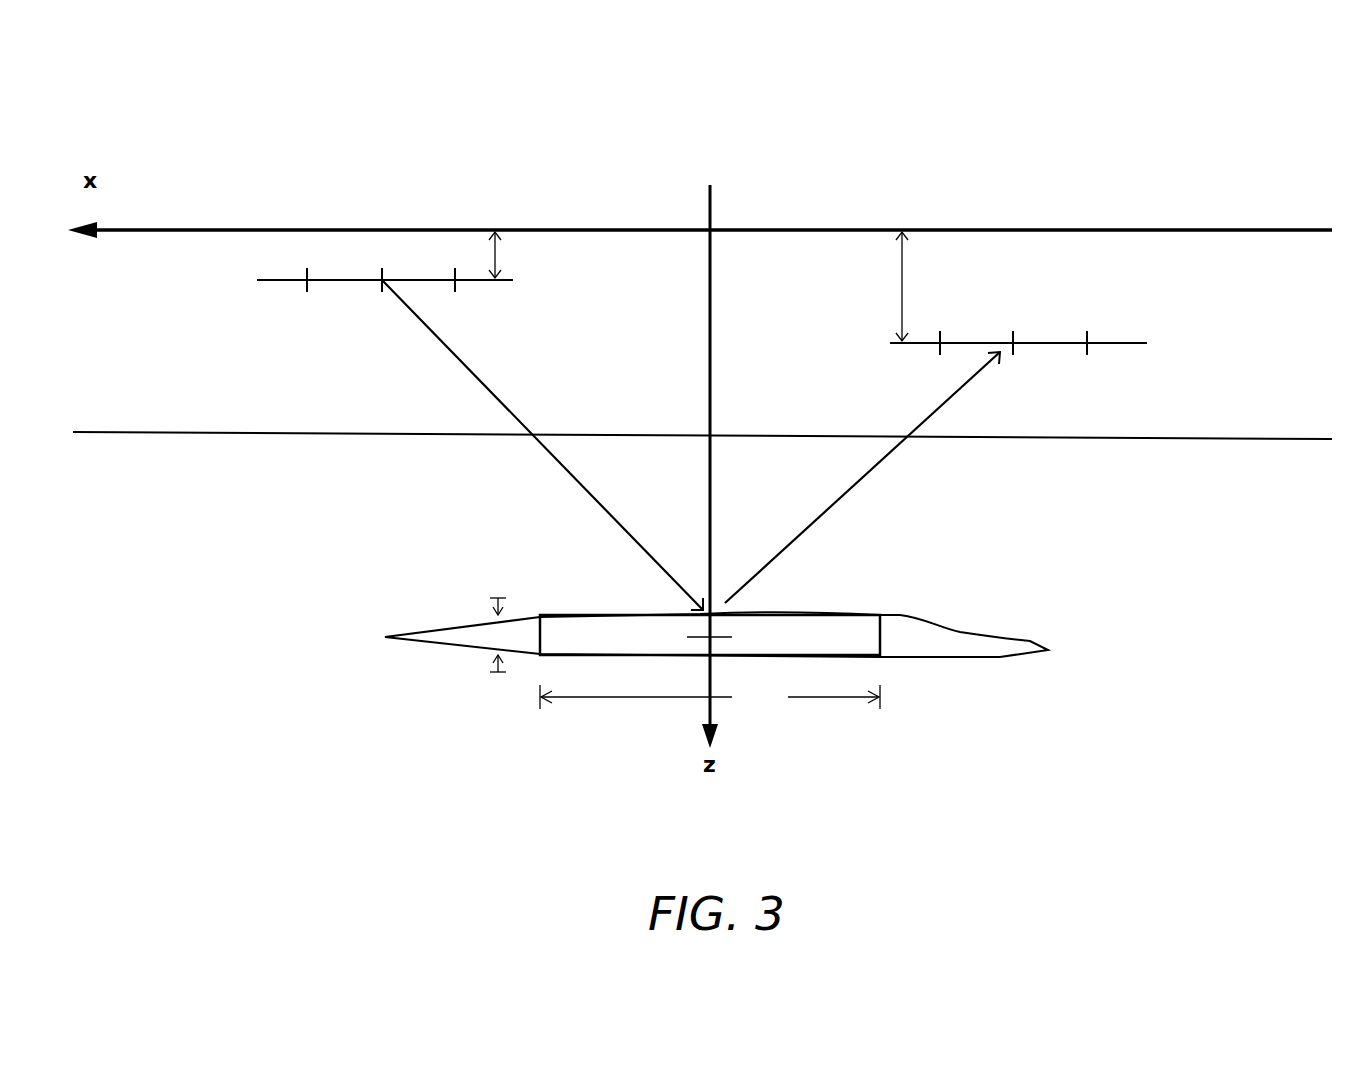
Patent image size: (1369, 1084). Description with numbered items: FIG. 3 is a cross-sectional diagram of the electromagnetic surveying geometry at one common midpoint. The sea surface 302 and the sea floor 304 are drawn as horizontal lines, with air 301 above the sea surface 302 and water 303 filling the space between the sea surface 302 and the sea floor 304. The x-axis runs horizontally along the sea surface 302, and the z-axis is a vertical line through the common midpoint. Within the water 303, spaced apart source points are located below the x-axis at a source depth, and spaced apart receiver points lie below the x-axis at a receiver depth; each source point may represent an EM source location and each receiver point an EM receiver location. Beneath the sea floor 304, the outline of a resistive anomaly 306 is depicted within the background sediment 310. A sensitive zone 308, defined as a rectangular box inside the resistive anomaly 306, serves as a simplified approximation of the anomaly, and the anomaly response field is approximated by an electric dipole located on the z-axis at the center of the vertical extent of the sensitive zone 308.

The air 301 is at (230, 92).
The sea surface 302 is at (1028, 230).
The water 303 is at (651, 421).
The sea floor 304 is at (1072, 439).
The resistive anomaly 306 is at (928, 638).
The sensitive zone 308 is at (777, 640).
The background sediment 310 is at (238, 604).